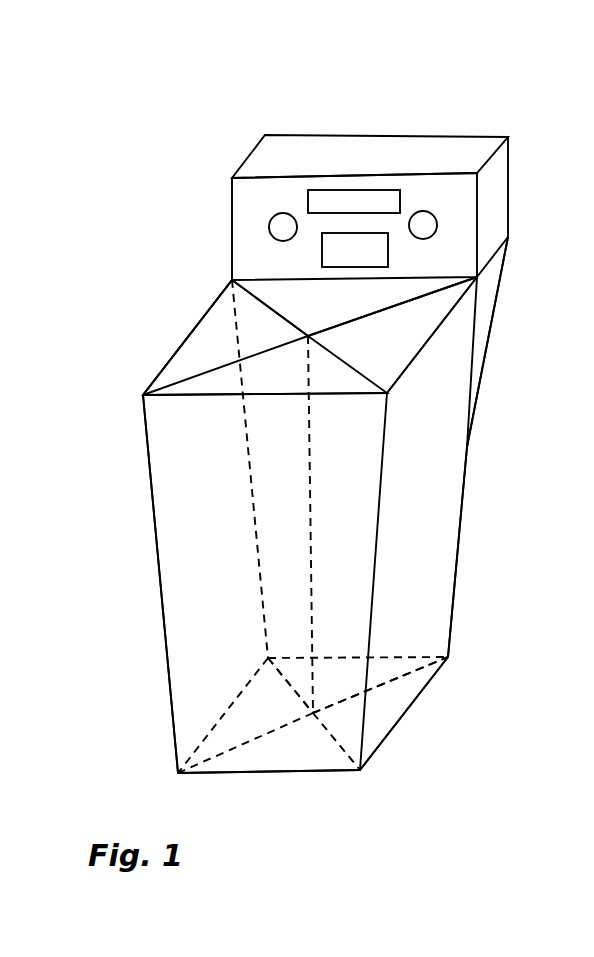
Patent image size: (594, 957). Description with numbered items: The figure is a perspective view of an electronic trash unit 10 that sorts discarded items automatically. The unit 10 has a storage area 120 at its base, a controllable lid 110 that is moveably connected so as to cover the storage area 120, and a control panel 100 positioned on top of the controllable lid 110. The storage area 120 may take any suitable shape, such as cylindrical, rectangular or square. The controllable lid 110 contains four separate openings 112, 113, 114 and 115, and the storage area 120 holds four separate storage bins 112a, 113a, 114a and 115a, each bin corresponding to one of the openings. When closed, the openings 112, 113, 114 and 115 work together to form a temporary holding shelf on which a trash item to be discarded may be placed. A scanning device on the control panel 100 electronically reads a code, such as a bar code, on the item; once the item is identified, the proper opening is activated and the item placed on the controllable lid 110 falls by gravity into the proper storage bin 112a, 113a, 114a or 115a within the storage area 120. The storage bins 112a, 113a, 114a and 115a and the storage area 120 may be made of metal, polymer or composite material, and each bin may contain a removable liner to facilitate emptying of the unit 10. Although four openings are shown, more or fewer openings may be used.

The electronic trash unit 10 is at (177, 175).
The control panel 100 is at (442, 213).
The controllable lid 110 is at (203, 309).
The opening 112 is at (192, 360).
The opening 113 is at (187, 398).
The opening 114 is at (403, 348).
The opening 115 is at (275, 290).
The storage bin 112a is at (187, 540).
The storage bin 113a is at (297, 763).
The storage bin 114a is at (388, 710).
The storage bin 115a is at (288, 663).
The storage area 120 is at (458, 543).